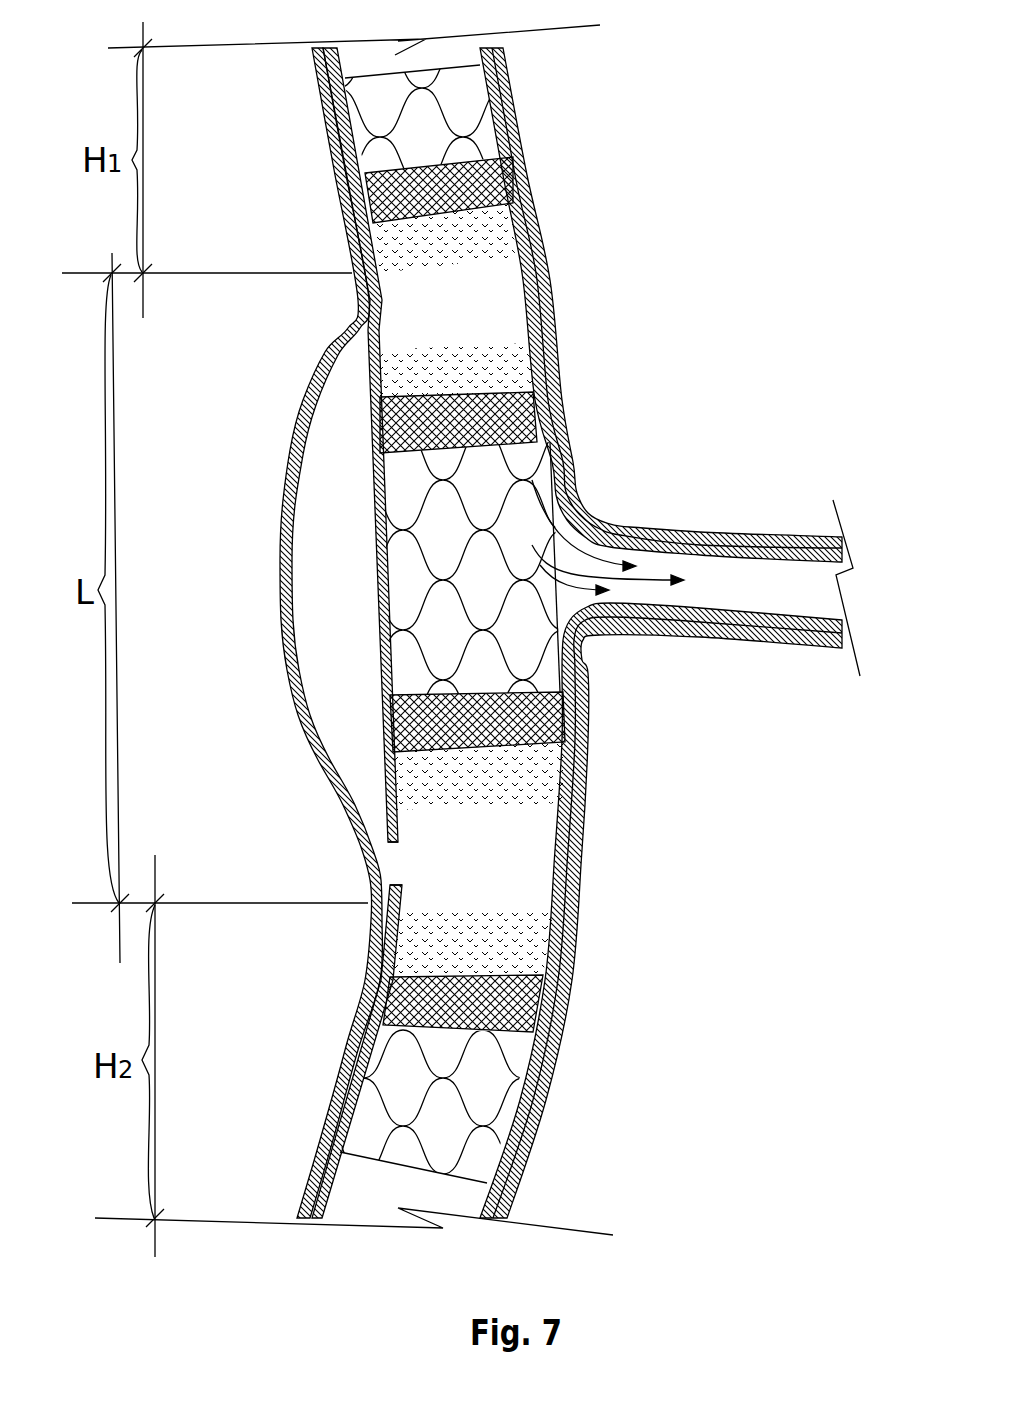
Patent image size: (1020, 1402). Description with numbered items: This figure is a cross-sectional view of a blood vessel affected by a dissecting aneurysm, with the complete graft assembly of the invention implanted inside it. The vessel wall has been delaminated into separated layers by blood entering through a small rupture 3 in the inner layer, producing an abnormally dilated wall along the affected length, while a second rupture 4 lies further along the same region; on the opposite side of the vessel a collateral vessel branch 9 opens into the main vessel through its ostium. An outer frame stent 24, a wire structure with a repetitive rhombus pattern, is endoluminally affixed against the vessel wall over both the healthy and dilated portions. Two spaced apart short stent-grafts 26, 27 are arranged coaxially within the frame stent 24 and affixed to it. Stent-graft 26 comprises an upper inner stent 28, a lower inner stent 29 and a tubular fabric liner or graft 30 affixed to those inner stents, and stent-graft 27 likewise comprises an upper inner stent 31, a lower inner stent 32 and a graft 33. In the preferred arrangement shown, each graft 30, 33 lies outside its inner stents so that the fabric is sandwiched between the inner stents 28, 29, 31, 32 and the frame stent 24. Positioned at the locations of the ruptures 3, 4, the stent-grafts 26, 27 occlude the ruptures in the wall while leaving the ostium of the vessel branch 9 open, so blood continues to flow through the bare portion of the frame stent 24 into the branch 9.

The rupture 3 is at (362, 318).
The rupture 4 is at (393, 850).
The vessel branch 9 is at (804, 642).
The frame stent 24 is at (427, 62).
The stent-graft 26 is at (485, 307).
The stent-graft 27 is at (530, 866).
The upper inner stent 28 is at (505, 172).
The lower inner stent 29 is at (503, 437).
The graft 30 is at (456, 319).
The upper inner stent 31 is at (565, 766).
The lower inner stent 32 is at (510, 1003).
The graft 33 is at (487, 878).